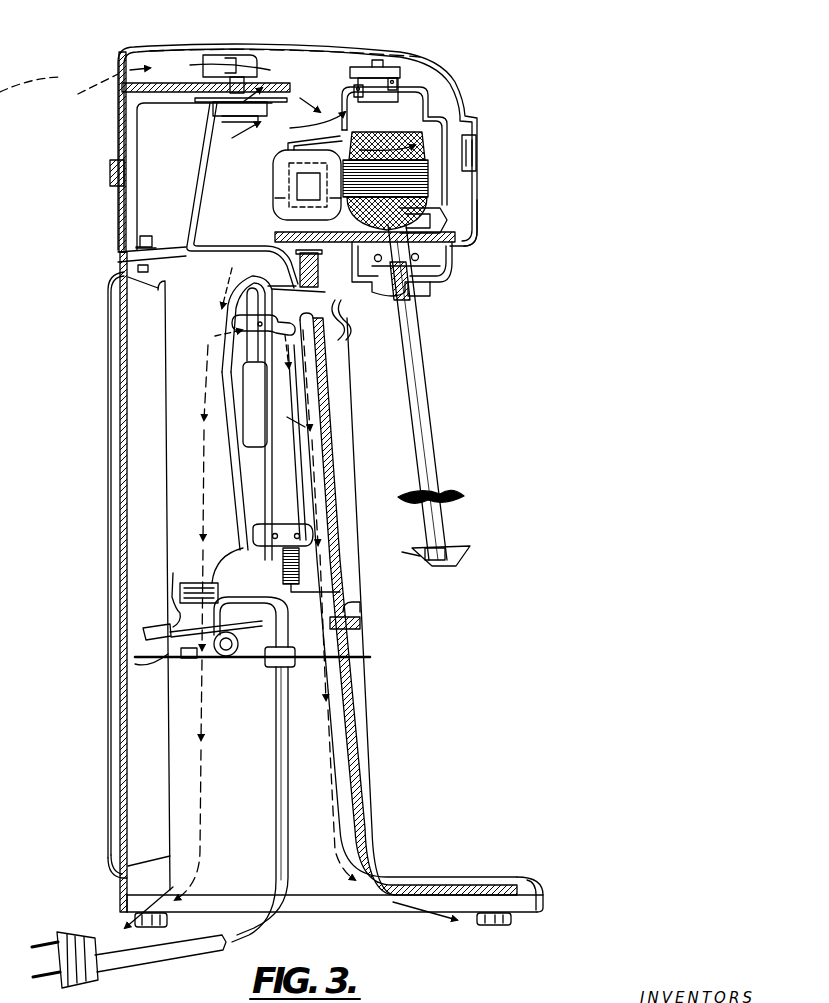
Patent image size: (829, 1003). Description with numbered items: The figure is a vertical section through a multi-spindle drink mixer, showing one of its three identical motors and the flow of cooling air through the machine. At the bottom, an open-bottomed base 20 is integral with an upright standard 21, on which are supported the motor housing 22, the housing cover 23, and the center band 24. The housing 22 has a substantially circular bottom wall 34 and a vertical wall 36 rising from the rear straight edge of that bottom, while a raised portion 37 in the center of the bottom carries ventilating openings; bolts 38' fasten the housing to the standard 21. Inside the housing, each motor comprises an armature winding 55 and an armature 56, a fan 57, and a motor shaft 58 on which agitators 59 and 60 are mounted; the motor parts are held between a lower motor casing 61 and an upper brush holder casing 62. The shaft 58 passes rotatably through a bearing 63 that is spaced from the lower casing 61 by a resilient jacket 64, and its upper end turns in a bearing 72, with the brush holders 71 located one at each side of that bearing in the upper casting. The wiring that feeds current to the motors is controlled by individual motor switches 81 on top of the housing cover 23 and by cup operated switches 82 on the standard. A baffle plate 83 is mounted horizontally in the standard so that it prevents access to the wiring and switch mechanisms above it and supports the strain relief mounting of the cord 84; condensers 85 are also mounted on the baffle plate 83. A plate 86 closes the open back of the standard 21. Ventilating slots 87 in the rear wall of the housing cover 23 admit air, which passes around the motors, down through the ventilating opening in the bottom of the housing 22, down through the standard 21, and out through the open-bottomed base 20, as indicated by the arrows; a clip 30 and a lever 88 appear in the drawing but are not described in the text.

The base 20 is at (540, 882).
The standard 21 is at (362, 752).
The motor housing 22 is at (470, 238).
The housing cover 23 is at (446, 70).
The center band 24 is at (478, 162).
The clip 30 is at (362, 614).
The bottom wall 34 is at (122, 260).
The vertical wall 36 is at (118, 220).
The raised portion 37 is at (215, 214).
The bolts 38' is at (151, 225).
The armature winding 55 is at (420, 204).
The armature 56 is at (432, 177).
The fan 57 is at (445, 224).
The motor shaft 58 is at (420, 350).
The agitator 59 is at (452, 498).
The agitator 60 is at (452, 550).
The lower motor casing 61 is at (444, 266).
The upper brush holder casing 62 is at (420, 112).
The bearing 63 is at (415, 272).
The resilient jacket 64 is at (342, 274).
The brush holders 71 is at (398, 86).
The bearing 72 is at (383, 60).
The motor switches 81 is at (246, 60).
The cup operated switches 82 is at (348, 340).
The baffle plate 83 is at (150, 662).
The cord 84 is at (274, 735).
The condensers 85 is at (206, 660).
The plate 86 is at (114, 608).
The ventilating slots 87 is at (207, 107).
The lever 88 is at (240, 337).